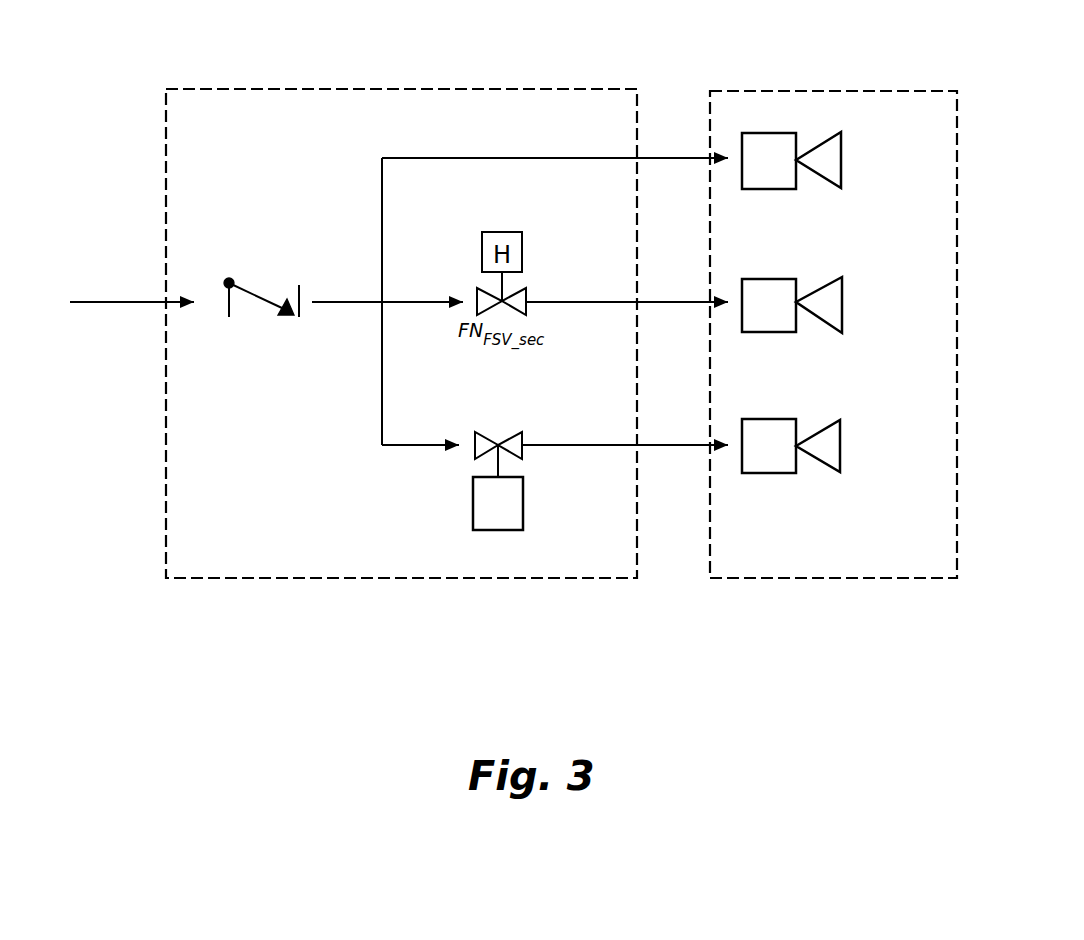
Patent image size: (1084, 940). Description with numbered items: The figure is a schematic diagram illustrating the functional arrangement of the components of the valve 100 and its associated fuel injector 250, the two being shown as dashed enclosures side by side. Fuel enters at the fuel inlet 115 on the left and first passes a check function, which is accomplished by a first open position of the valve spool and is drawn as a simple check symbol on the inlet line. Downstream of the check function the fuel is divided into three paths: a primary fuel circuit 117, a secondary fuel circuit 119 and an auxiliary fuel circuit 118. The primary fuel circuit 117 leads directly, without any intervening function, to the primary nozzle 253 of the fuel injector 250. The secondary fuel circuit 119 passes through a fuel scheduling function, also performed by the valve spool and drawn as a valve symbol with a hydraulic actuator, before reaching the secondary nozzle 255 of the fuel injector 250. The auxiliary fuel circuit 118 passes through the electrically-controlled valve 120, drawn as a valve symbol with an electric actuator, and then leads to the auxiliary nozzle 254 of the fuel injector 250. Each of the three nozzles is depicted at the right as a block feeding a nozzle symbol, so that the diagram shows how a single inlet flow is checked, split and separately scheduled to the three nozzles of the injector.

The valve 100 is at (239, 76).
The fuel injector 250 is at (758, 78).
The fuel inlet 115 is at (100, 303).
The primary fuel circuit 117 is at (670, 157).
The secondary fuel circuit 119 is at (670, 300).
The auxiliary fuel circuit 118 is at (670, 443).
The electrically-controlled valve 120 is at (523, 520).
The primary nozzle 253 is at (841, 160).
The secondary nozzle 255 is at (842, 302).
The auxiliary nozzle 254 is at (840, 446).